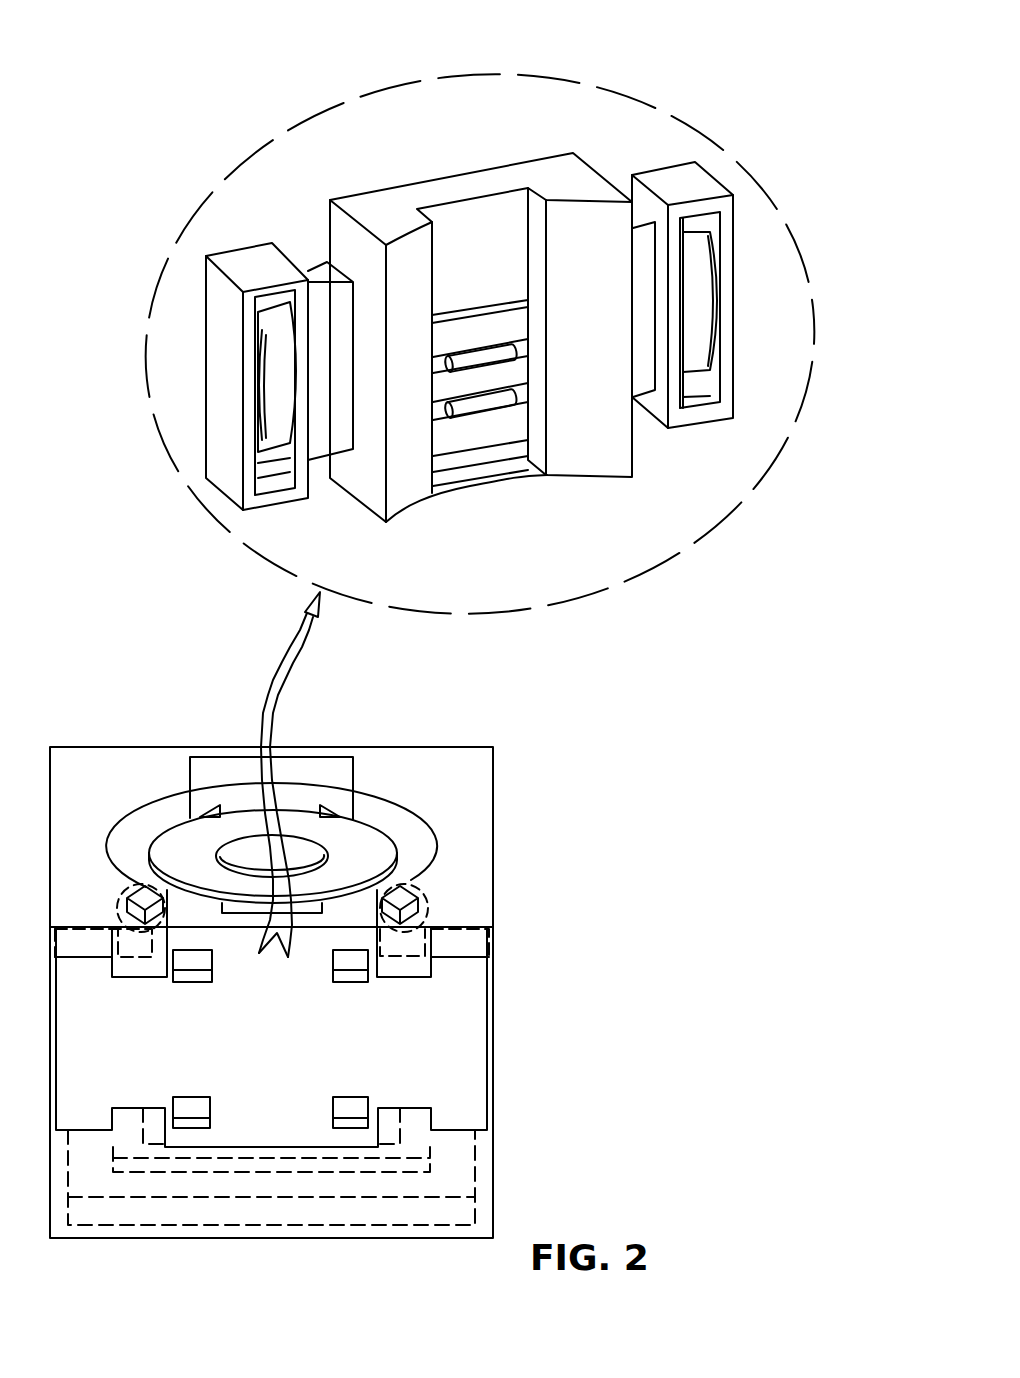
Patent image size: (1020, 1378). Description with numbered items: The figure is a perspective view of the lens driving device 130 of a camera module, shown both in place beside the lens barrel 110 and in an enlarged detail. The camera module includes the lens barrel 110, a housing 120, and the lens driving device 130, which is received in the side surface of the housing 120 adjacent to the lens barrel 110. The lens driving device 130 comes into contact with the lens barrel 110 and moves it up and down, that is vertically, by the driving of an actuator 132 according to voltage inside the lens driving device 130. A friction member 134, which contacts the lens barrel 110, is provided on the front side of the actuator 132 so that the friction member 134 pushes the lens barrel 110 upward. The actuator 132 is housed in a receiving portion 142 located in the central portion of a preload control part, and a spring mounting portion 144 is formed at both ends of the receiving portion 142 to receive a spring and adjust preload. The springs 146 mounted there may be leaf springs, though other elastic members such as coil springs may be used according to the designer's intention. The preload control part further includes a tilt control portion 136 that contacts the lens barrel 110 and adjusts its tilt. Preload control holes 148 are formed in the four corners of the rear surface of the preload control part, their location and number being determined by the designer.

The lens barrel 110 is at (349, 849).
The housing 120 is at (470, 783).
The lens driving device 130 is at (156, 70).
The actuator 132 is at (473, 329).
The friction member 134 is at (497, 353).
The tilt control portion 136 is at (610, 432).
The receiving portion 142 is at (445, 319).
The spring mounting portion 144 is at (700, 216).
The springs 146 is at (707, 302).
The preload control holes 148 is at (355, 964).